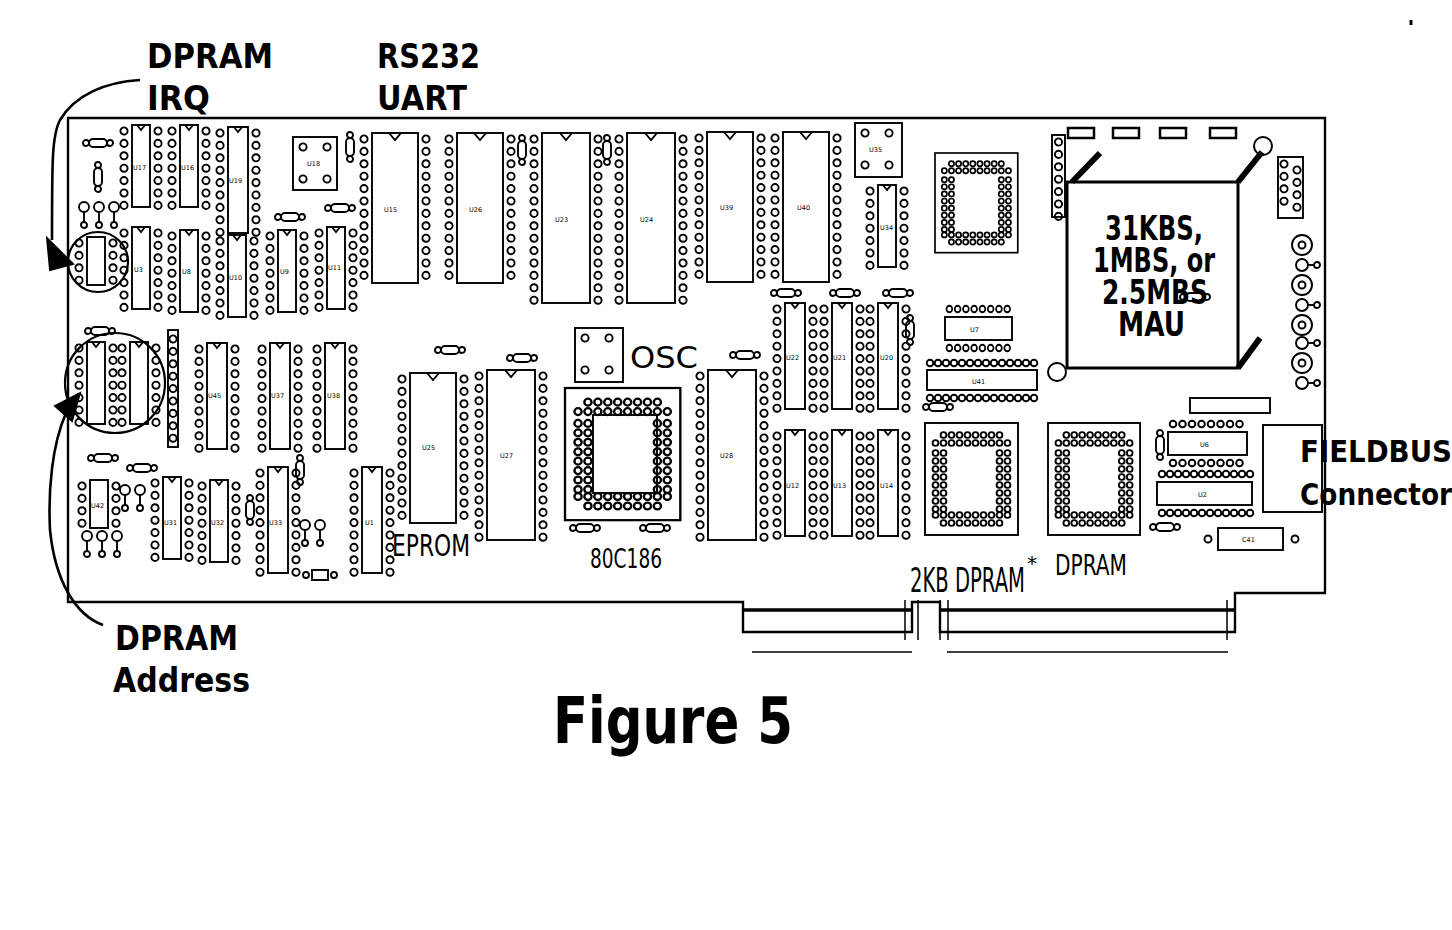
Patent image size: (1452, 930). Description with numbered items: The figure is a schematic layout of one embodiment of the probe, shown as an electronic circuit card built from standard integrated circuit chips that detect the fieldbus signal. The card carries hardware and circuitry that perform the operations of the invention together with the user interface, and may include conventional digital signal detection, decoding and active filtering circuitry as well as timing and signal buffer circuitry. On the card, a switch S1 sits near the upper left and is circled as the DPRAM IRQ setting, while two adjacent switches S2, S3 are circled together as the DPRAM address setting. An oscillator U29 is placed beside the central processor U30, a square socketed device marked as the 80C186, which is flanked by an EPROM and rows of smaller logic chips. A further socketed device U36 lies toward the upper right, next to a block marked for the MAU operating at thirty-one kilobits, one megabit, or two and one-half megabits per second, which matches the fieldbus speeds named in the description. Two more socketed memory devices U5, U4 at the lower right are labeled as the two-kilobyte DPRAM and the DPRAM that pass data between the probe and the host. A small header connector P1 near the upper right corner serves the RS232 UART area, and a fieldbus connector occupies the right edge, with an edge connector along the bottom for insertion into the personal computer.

The DPRAM IRQ switch S1 is at (98, 262).
The DPRAM address switch S2 is at (138, 384).
The DPRAM address switch S3 is at (115, 383).
The oscillator U29 is at (599, 355).
The 80C186 processor U30 is at (622, 454).
The PLCC device U36 is at (976, 203).
The 2KB DPRAM U5 is at (971, 479).
The DPRAM U4 is at (1094, 479).
The RS232 UART connector P1 is at (1290, 182).